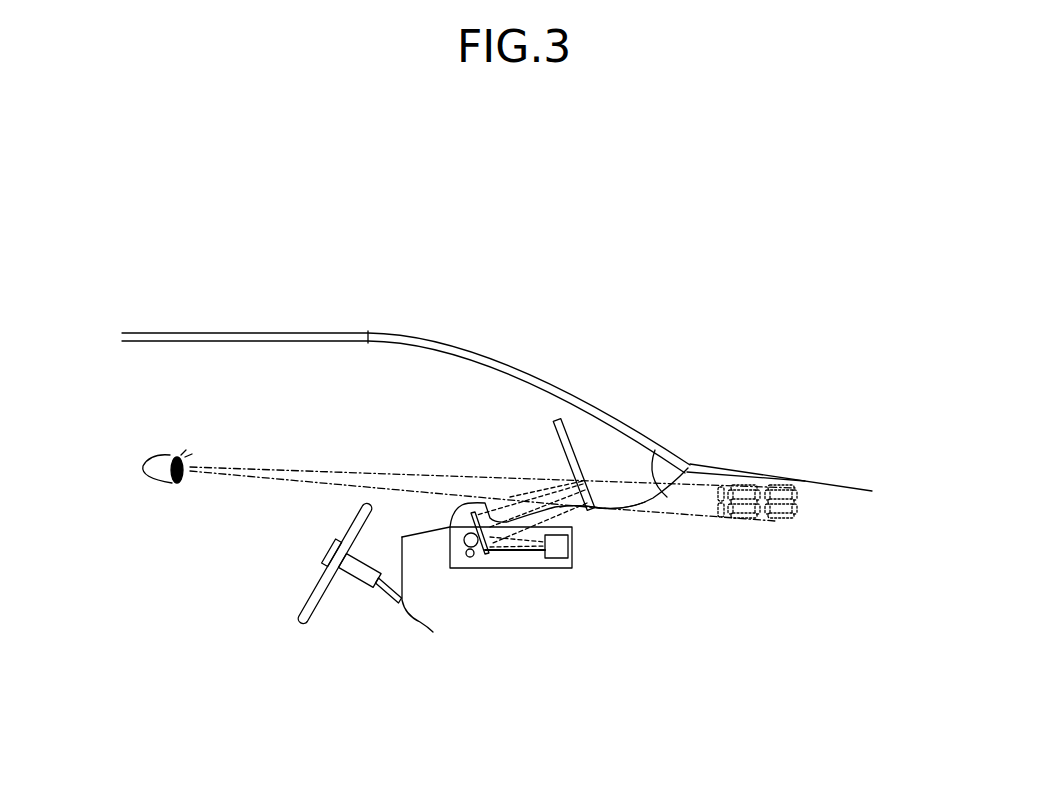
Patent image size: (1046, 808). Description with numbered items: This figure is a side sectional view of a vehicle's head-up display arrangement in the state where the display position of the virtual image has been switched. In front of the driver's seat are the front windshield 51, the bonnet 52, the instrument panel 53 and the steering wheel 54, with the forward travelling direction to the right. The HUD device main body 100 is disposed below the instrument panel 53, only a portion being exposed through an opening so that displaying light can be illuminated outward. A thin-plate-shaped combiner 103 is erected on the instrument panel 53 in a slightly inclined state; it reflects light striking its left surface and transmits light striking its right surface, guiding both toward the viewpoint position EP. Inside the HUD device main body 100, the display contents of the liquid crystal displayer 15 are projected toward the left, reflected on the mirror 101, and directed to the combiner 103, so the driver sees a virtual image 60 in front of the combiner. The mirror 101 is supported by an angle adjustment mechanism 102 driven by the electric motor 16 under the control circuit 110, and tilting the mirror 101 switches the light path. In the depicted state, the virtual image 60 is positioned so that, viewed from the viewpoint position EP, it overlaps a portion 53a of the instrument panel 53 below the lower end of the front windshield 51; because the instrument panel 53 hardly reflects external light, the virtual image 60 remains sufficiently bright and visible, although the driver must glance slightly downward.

The viewpoint position EP is at (166, 450).
The front windshield 51 is at (572, 388).
The bonnet 52 is at (824, 483).
The instrument panel 53 is at (594, 508).
The portion of the instrument panel 53a is at (655, 450).
The steering wheel 54 is at (310, 594).
The virtual image 60 is at (812, 522).
The HUD device main body 100 is at (462, 557).
The mirror 101 is at (517, 550).
The angle adjustment mechanism 102 is at (515, 618).
The electric motor 16 is at (470, 560).
The combiner 103 is at (600, 489).
The liquid crystal displayer 15 is at (572, 607).
The control circuit 110 is at (572, 607).